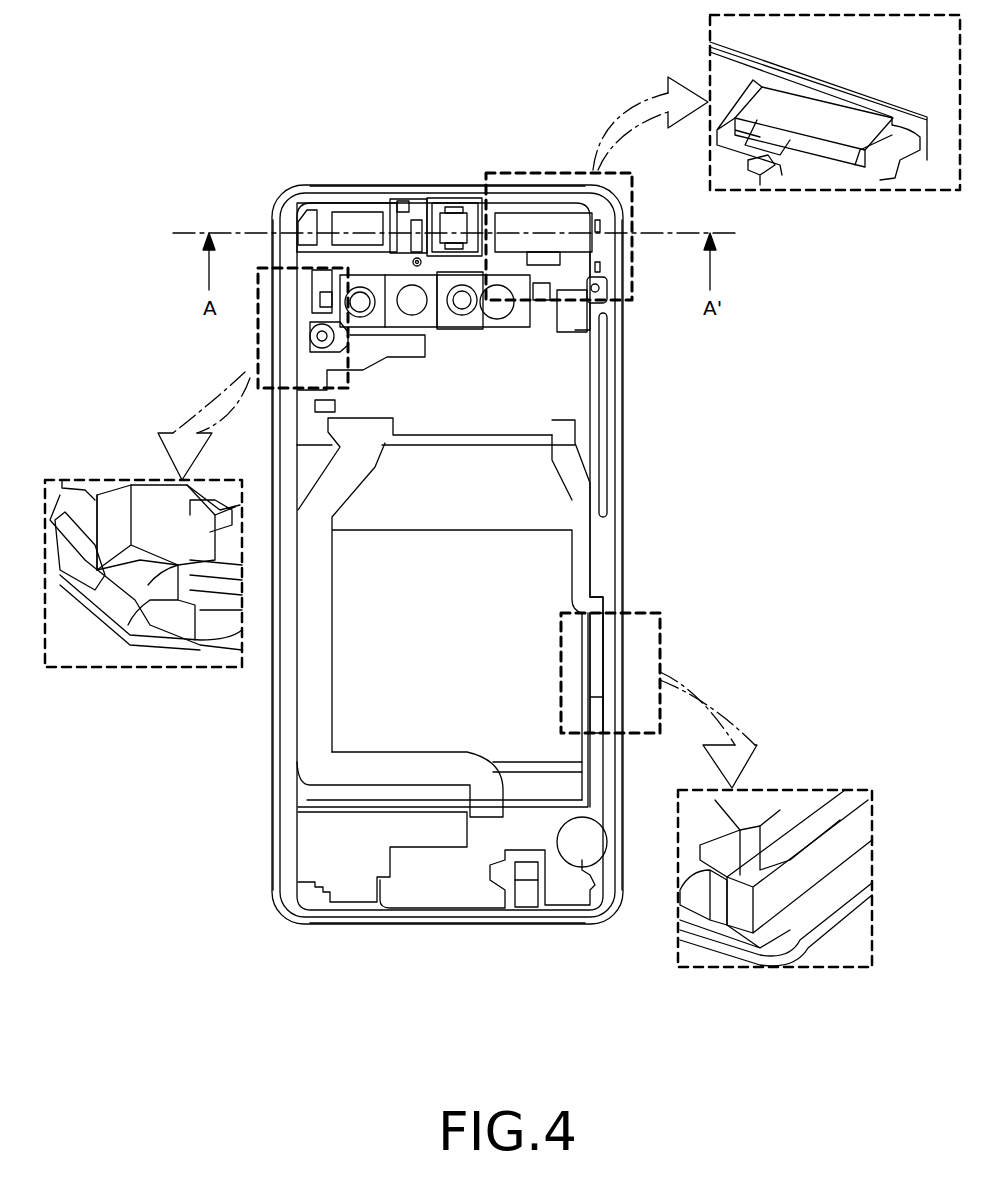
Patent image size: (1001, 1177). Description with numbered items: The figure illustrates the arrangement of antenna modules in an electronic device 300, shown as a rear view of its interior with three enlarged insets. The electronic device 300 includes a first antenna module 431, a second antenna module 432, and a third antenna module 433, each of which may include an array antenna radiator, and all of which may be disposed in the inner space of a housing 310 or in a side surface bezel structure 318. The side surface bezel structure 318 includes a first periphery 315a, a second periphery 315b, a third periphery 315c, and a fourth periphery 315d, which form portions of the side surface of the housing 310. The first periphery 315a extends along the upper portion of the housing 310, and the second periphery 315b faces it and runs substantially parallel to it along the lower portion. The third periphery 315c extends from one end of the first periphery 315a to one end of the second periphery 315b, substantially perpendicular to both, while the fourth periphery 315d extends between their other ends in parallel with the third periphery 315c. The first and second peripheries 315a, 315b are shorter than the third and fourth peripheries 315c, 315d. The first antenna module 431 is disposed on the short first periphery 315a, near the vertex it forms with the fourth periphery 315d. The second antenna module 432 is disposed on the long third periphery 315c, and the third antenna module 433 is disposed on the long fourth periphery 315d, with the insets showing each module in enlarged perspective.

The electronic device 300 is at (252, 91).
The housing 310 is at (281, 197).
The first periphery 315a is at (342, 184).
The second periphery 315b is at (442, 925).
The third periphery 315c is at (271, 747).
The fourth periphery 315d is at (624, 483).
The side surface bezel structure 318 is at (624, 367).
The first antenna module 431 is at (518, 216).
The second antenna module 432 is at (304, 352).
The third antenna module 433 is at (655, 660).